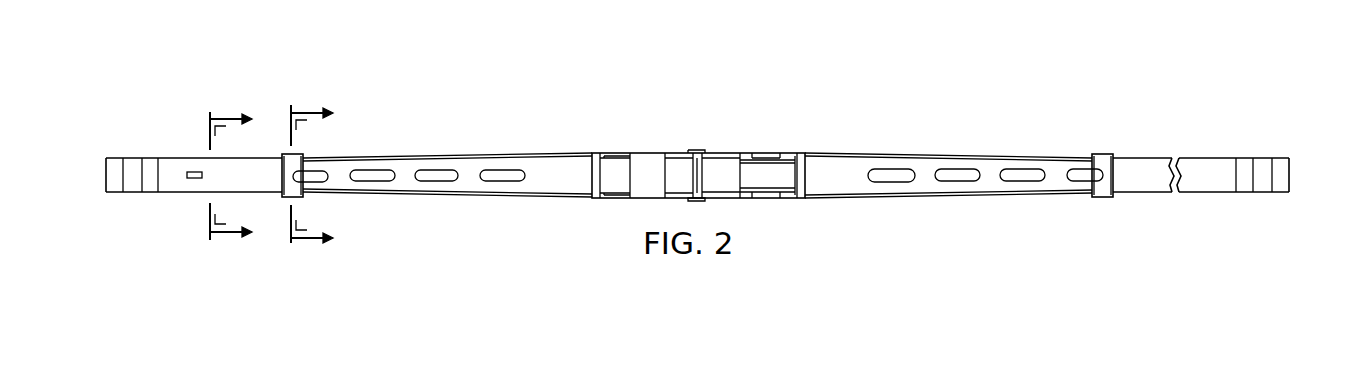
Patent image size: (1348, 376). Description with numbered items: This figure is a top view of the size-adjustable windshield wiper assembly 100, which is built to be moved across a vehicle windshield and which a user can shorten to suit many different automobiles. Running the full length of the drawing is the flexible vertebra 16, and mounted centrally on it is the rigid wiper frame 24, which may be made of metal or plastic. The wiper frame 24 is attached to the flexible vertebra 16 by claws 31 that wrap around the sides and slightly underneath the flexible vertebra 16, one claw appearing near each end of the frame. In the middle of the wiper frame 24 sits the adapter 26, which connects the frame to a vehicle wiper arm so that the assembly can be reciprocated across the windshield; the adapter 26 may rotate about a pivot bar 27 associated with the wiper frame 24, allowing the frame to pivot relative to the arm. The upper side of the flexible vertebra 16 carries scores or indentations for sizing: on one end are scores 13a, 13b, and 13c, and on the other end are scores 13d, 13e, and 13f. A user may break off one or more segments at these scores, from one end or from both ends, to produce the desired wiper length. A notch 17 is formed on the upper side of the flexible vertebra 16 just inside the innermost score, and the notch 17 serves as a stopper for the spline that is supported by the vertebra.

The size-adjustable windshield wiper assembly 100 is at (877, 67).
The score 13a is at (121, 175).
The score 13b is at (140, 173).
The score 13c is at (157, 169).
The score 13d is at (1242, 173).
The score 13e is at (1255, 173).
The score 13f is at (1273, 173).
The flexible vertebra 16 is at (188, 166).
The notch 17 is at (196, 179).
The wiper frame 24 is at (923, 168).
The adapter 26 is at (760, 168).
The pivot bar 27 is at (697, 150).
The claws 31 is at (296, 153).